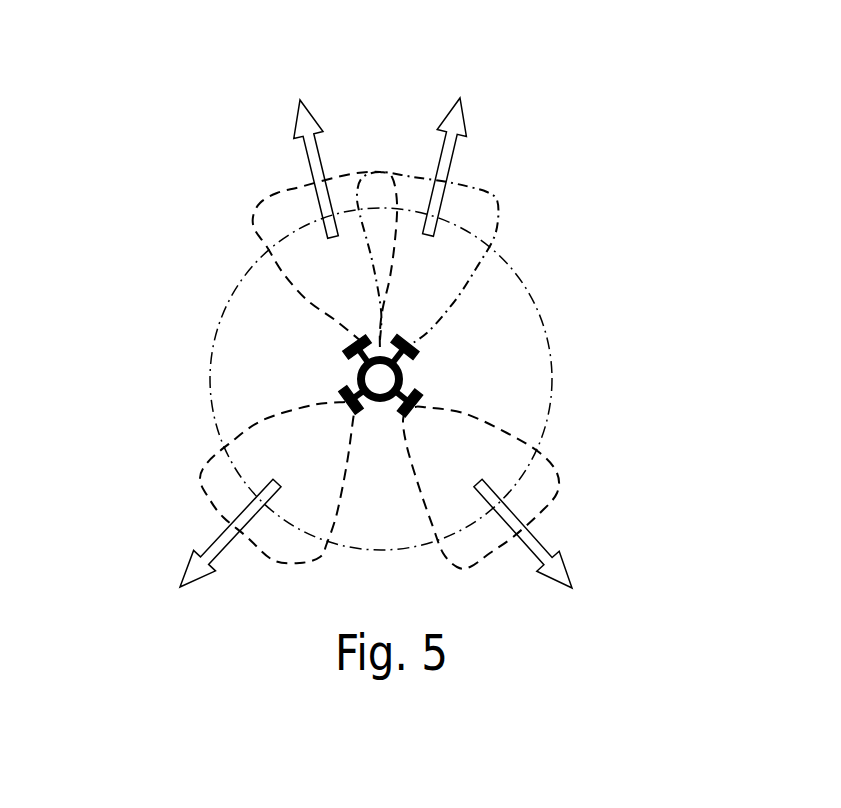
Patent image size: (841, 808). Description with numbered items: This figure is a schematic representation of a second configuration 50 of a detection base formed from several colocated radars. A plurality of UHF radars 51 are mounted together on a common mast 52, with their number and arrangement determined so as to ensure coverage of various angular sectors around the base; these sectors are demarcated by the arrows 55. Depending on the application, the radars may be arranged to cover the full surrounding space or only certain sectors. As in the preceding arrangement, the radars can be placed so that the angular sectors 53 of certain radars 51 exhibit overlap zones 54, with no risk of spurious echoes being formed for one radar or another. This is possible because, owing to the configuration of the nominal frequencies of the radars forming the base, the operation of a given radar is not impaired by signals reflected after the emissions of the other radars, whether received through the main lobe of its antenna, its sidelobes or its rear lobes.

The second configuration of base 50 is at (482, 388).
The UHF radars 51 is at (340, 398).
The mast 52 is at (404, 379).
The angular sectors 53 is at (272, 227).
The overlap zones 54 is at (380, 188).
The arrows 55 is at (459, 122).